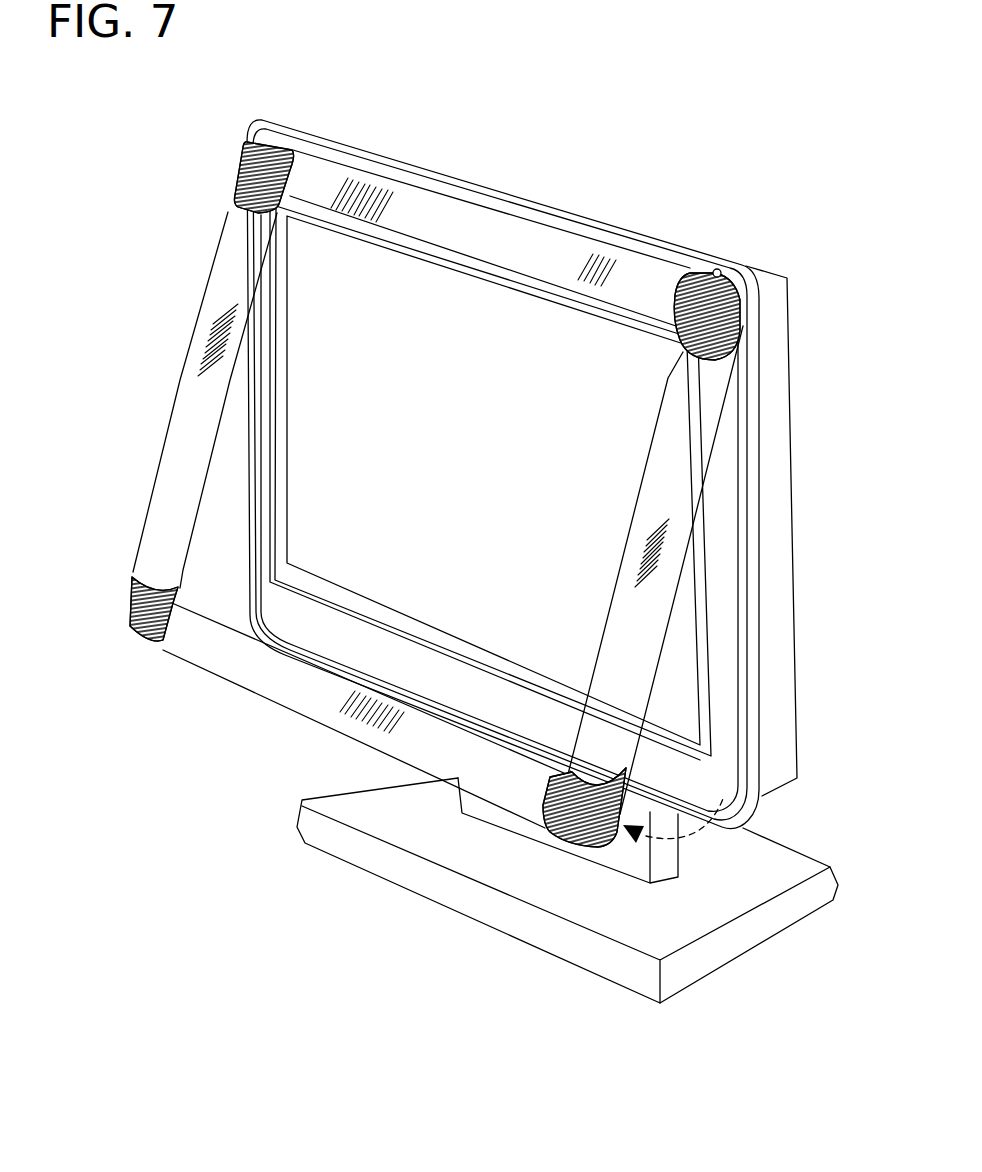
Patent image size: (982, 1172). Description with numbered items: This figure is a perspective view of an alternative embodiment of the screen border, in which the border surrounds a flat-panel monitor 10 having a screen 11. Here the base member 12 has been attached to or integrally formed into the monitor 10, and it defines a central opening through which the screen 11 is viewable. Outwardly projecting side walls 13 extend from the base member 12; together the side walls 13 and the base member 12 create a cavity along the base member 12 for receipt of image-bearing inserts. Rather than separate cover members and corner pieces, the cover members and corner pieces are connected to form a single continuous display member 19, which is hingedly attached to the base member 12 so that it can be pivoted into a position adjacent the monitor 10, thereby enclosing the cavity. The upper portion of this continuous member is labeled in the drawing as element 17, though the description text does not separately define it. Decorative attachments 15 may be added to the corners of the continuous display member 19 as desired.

The monitor 10 is at (773, 552).
The screen 11 is at (313, 413).
The base member 12 is at (722, 690).
The side walls 13 is at (268, 386).
The decorative attachments 15 is at (248, 166).
The upper tube 17 is at (543, 222).
The continuous display member 19 is at (320, 693).